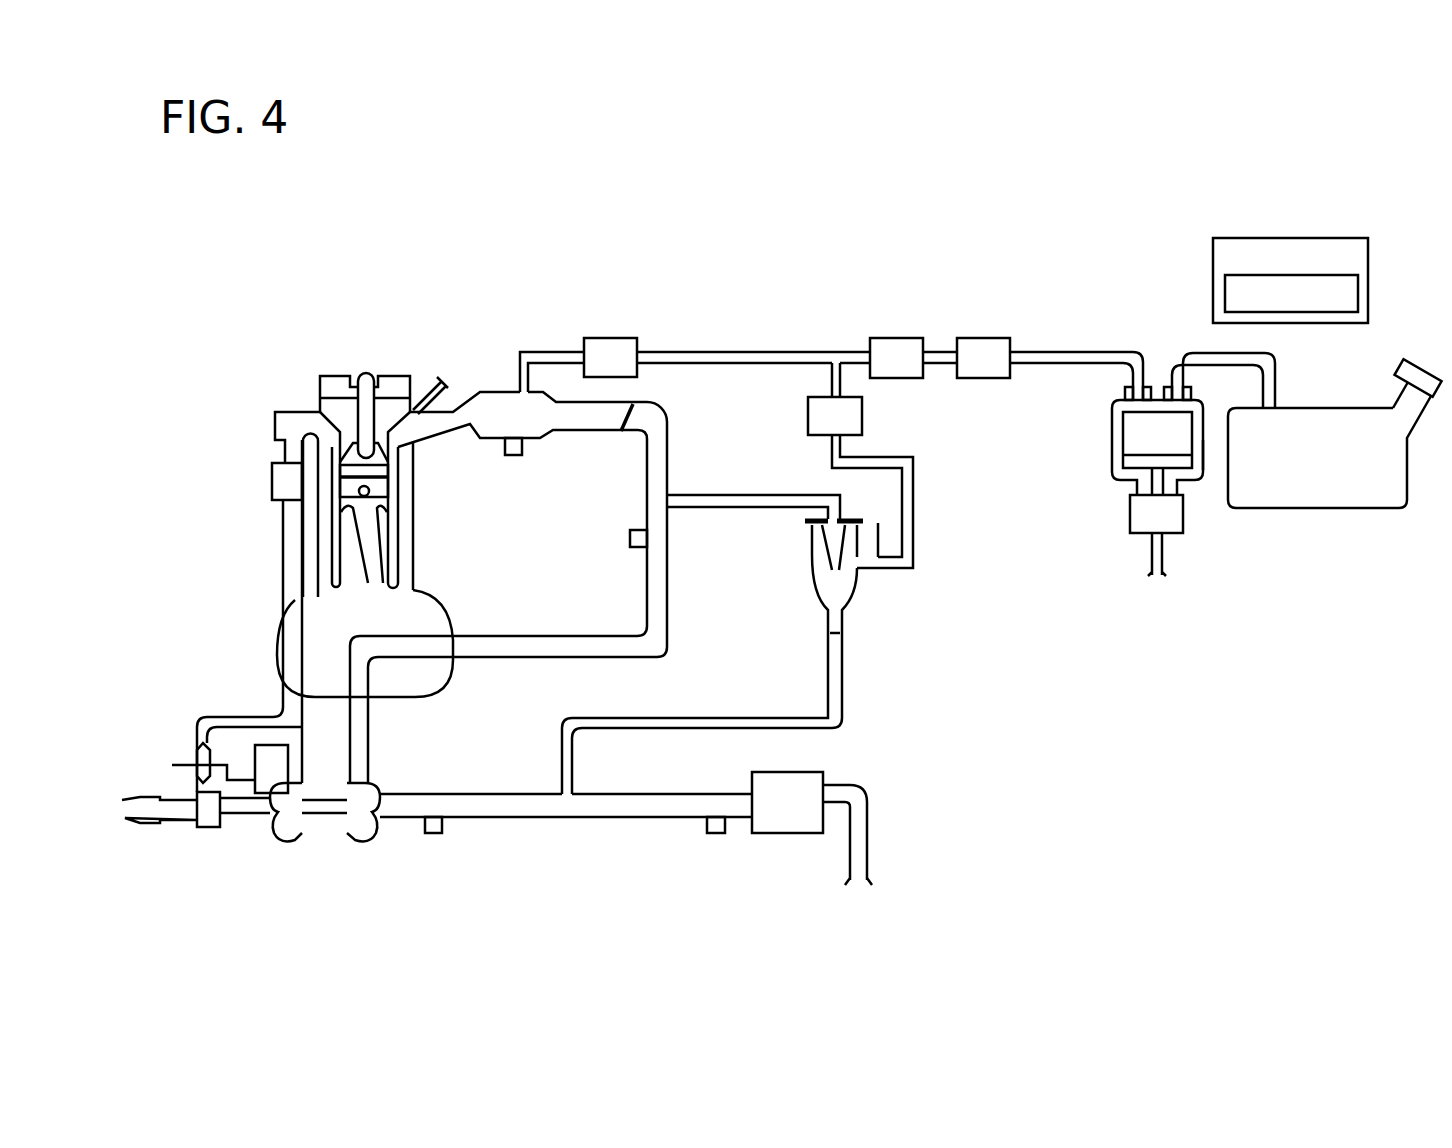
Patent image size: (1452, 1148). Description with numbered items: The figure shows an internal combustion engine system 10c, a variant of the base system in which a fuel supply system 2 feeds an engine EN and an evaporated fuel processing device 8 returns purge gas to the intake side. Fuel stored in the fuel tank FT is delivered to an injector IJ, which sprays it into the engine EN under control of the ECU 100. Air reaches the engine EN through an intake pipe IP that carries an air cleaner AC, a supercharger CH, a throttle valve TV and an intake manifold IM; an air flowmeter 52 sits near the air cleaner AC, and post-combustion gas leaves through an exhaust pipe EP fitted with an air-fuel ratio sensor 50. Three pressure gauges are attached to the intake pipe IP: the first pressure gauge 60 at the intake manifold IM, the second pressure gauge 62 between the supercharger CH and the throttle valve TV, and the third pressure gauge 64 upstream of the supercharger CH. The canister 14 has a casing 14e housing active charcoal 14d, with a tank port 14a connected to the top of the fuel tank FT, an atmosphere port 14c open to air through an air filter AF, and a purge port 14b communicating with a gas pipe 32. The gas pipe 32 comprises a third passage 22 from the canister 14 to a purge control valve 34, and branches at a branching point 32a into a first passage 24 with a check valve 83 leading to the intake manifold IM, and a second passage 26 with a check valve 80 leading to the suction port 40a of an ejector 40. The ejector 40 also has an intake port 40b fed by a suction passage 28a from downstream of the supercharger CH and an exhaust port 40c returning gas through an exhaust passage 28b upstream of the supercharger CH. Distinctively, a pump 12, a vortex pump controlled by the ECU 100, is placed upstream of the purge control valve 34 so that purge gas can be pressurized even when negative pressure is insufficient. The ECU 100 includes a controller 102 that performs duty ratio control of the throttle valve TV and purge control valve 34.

The fuel supply system 2 is at (609, 270).
The internal combustion engine system 10c is at (1144, 272).
The evaporated fuel processing device 8 is at (1074, 496).
The ECU 100 is at (1370, 264).
The controller 102 is at (1360, 299).
The engine EN is at (330, 376).
The injector IJ is at (422, 376).
The intake manifold IM is at (497, 390).
The throttle valve TV is at (640, 420).
The exhaust pipe EP is at (283, 670).
The supercharger CH is at (330, 840).
The intake pipe IP is at (608, 817).
The air cleaner AC is at (812, 835).
The air filter AF is at (1172, 527).
The fuel tank FT is at (1345, 508).
The pump 12 is at (977, 338).
The canister 14 is at (1188, 482).
The tank port 14a is at (1190, 393).
The purge port 14b is at (1130, 393).
The atmosphere port 14c is at (1140, 487).
The active charcoal 14d is at (1128, 425).
The casing 14e is at (1200, 455).
The third passage 22 is at (1063, 352).
The first passage 24 is at (747, 352).
The second passage 26 is at (913, 513).
The suction passage 28a is at (780, 495).
The exhaust passage 28b is at (683, 718).
The gas pipe 32 is at (1140, 362).
The branching point 32a is at (835, 352).
The purge control valve 34 is at (890, 338).
The ejector 40 is at (861, 606).
The suction port 40a is at (865, 557).
The intake port 40b is at (815, 530).
The exhaust port 40c is at (828, 630).
The air-fuel ratio sensor 50 is at (272, 482).
The air flowmeter 52 is at (715, 835).
The first pressure gauge 60 is at (513, 458).
The second pressure gauge 62 is at (628, 538).
The third pressure gauge 64 is at (433, 836).
The check valve 80 is at (865, 415).
The check valve 83 is at (610, 338).